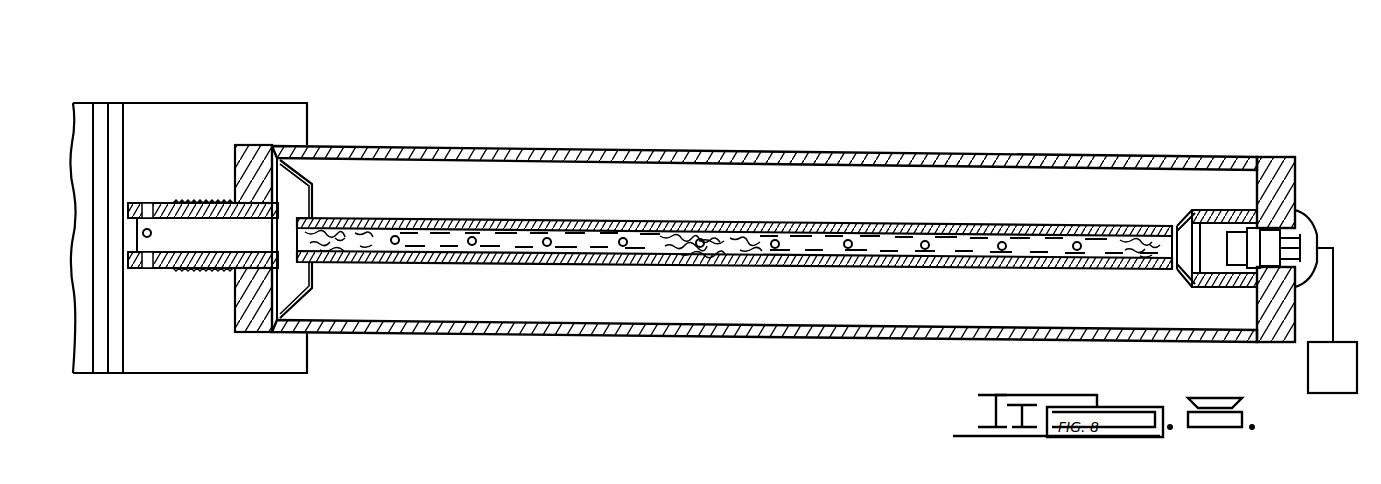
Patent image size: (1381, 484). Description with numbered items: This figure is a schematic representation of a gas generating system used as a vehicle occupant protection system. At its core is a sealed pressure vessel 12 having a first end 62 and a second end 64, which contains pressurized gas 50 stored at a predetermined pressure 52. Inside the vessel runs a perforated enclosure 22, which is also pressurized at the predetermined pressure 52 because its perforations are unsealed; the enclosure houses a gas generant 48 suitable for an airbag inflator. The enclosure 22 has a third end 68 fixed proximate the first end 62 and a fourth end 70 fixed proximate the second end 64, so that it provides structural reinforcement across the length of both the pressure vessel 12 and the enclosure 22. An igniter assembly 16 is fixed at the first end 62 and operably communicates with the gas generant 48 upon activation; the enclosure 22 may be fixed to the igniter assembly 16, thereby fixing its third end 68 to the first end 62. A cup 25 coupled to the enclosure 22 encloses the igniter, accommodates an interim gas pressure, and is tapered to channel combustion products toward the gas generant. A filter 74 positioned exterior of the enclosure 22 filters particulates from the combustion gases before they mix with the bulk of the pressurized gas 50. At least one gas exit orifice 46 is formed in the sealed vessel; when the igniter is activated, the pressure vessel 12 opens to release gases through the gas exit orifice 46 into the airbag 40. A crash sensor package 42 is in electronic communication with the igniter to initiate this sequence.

The pressure vessel 12 is at (933, 154).
The igniter assembly 16 is at (1238, 222).
The perforated enclosure 22 is at (817, 219).
The cup 25 is at (1201, 210).
The airbag 40 is at (99, 118).
The crash sensor package 42 is at (1327, 378).
The gas exit orifice 46 is at (150, 230).
The gas generant 48 is at (717, 262).
The pressurized gas 50 is at (779, 179).
The predetermined pressure 52 is at (613, 207).
The first end 62 is at (1304, 178).
The second end 64 is at (273, 146).
The third end 68 is at (1164, 250).
The fourth end 70 is at (323, 222).
The filter 74 is at (1068, 228).